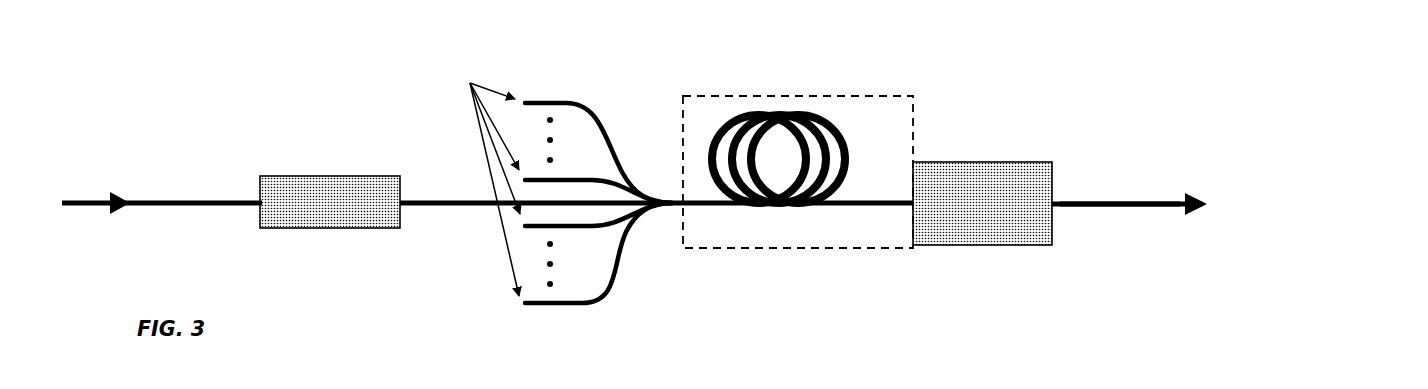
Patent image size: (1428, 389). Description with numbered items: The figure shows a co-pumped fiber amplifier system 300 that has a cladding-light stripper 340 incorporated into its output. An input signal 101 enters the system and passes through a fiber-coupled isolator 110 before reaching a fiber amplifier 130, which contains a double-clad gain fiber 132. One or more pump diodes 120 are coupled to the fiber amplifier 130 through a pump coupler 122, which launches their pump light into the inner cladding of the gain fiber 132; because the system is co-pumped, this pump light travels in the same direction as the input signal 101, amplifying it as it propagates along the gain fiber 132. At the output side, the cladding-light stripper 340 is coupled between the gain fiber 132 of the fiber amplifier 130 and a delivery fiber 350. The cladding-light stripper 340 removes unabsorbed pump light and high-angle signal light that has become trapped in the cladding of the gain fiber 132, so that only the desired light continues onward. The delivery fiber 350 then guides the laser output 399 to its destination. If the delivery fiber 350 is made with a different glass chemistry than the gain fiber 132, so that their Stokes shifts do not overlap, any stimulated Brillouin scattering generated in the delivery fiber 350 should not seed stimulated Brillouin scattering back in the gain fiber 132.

The fiber amplifier system 300 is at (258, 68).
The input signal 101 is at (146, 187).
The fiber-coupled isolator 110 is at (330, 218).
The pump diodes 120 is at (520, 154).
The pump coupler 122 is at (572, 235).
The fiber amplifier 130 is at (750, 257).
The gain fiber 132 is at (770, 107).
The cladding-light stripper 340 is at (982, 219).
The delivery fiber 350 is at (1129, 227).
The laser output 399 is at (1228, 178).